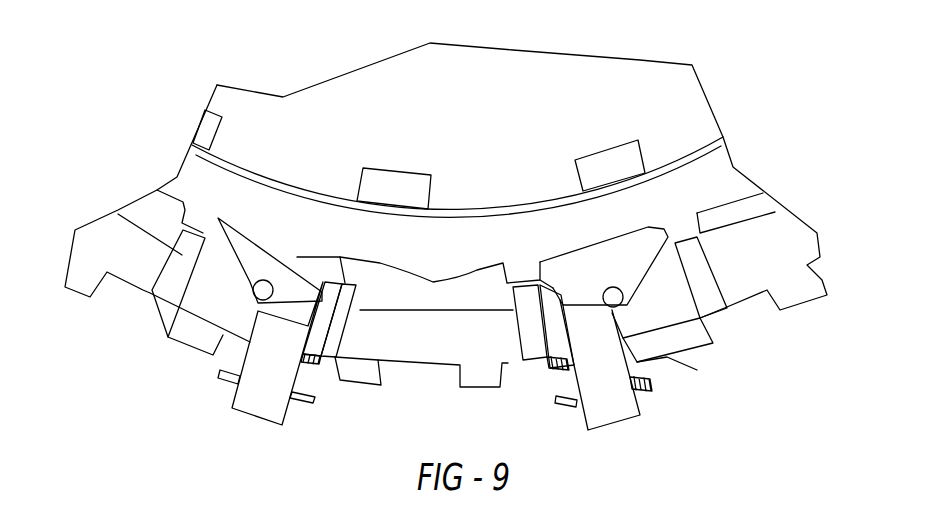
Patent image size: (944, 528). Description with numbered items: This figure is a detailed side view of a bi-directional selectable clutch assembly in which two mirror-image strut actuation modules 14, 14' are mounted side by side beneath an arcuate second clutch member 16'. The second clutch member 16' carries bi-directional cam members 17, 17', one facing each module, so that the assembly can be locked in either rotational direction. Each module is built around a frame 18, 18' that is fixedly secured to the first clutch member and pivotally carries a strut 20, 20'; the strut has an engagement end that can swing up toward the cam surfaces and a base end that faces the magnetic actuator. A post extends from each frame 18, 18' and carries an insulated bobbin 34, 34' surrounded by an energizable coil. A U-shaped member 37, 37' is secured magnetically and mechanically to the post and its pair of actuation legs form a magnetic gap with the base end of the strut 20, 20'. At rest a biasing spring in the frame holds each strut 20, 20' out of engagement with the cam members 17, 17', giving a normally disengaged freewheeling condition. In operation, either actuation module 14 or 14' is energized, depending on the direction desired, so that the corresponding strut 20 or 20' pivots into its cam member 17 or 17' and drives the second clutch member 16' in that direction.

The strut actuation module 14 is at (709, 415).
The strut actuation module 14' is at (325, 378).
The second clutch member 16' is at (457, 163).
The cam member 17 is at (541, 361).
The cam member 17' is at (421, 355).
The frame 18 is at (612, 272).
The frame 18' is at (260, 264).
The strut 20 is at (711, 163).
The strut 20' is at (187, 285).
The insulated bobbin 34 is at (706, 320).
The insulated bobbin 34' is at (351, 356).
The U-shaped member 37 is at (613, 391).
The U-shaped member 37' is at (270, 383).